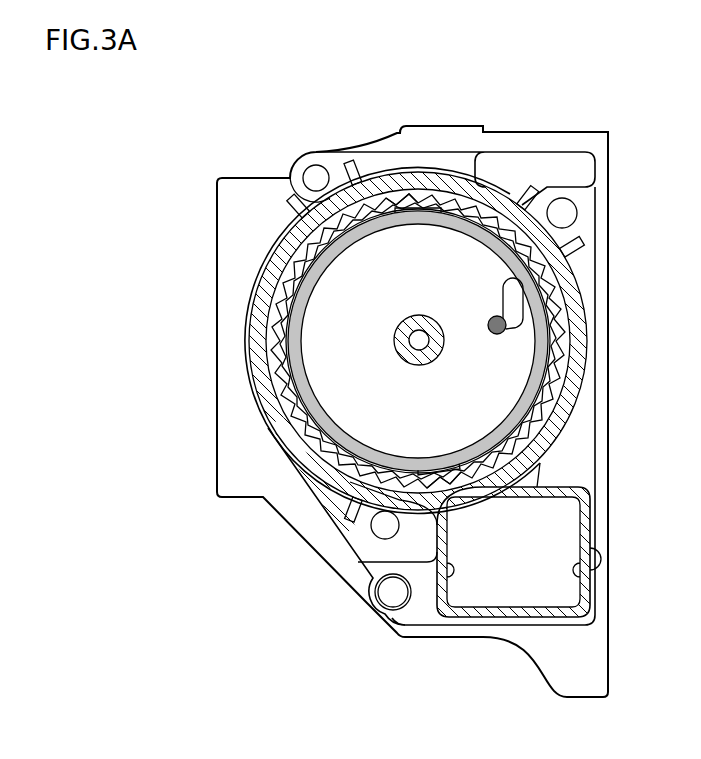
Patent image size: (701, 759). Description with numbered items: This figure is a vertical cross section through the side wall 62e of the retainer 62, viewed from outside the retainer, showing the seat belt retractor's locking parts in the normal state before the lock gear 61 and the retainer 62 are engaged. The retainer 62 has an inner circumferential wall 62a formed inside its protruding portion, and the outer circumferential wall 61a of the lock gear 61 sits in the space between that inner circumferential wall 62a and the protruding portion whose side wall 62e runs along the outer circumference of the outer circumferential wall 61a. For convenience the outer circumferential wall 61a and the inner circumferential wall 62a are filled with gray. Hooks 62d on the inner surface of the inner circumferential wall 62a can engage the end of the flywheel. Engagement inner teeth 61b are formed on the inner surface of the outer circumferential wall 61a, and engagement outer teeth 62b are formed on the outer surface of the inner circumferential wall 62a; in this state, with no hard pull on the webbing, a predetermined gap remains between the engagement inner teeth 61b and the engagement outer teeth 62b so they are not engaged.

The retainer 62 is at (268, 148).
The inner circumferential wall 62a is at (298, 297).
The engagement outer teeth 62b is at (437, 470).
The hooks 62d is at (415, 213).
The side wall 62e is at (252, 338).
The lock gear 61 is at (570, 344).
The outer circumferential wall 61a is at (388, 197).
The engagement inner teeth 61b is at (473, 480).